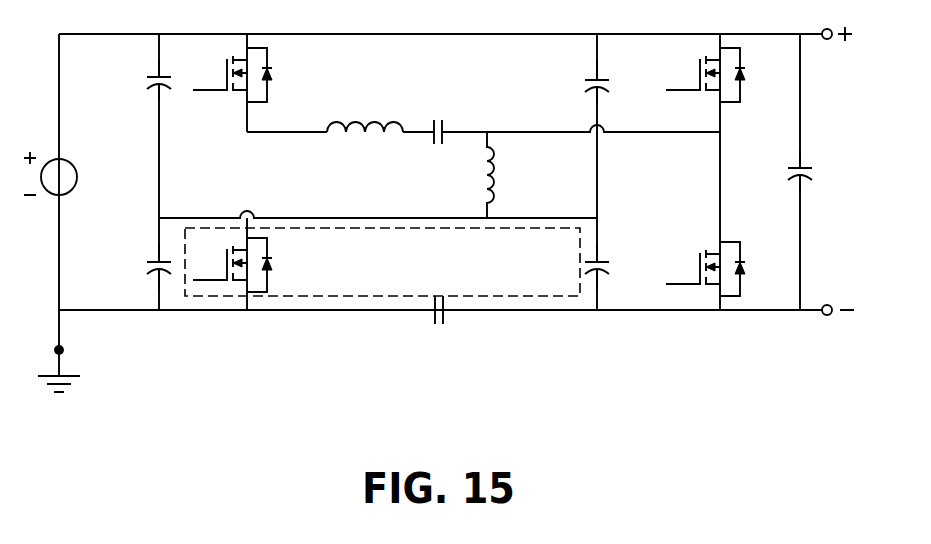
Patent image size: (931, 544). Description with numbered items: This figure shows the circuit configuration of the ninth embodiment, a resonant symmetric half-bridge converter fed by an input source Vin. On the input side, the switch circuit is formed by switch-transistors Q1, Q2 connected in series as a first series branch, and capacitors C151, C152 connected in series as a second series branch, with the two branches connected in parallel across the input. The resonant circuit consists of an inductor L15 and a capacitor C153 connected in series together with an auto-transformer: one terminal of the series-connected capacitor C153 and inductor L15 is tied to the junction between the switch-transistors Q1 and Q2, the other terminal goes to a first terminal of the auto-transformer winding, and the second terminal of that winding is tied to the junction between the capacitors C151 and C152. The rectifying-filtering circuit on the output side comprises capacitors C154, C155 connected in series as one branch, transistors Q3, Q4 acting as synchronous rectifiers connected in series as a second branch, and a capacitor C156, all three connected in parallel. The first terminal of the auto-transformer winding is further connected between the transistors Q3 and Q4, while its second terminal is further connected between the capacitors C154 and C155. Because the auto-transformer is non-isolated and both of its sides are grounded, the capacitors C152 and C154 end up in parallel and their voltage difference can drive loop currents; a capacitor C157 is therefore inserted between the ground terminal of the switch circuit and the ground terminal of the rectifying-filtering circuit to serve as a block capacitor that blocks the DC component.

The input voltage source Vin is at (68, 173).
The capacitor C151 is at (133, 80).
The capacitor C152 is at (129, 267).
The capacitor C153 is at (441, 151).
The capacitor C154 is at (624, 262).
The capacitor C155 is at (625, 77).
The capacitor C156 is at (828, 172).
The capacitor C157 is at (442, 328).
The inductor L15 is at (410, 153).
The switch-transistor Q1 is at (248, 83).
The switch-transistor Q2 is at (248, 264).
The transistor (SR) Q3 is at (722, 83).
The transistor (SR) Q4 is at (722, 221).